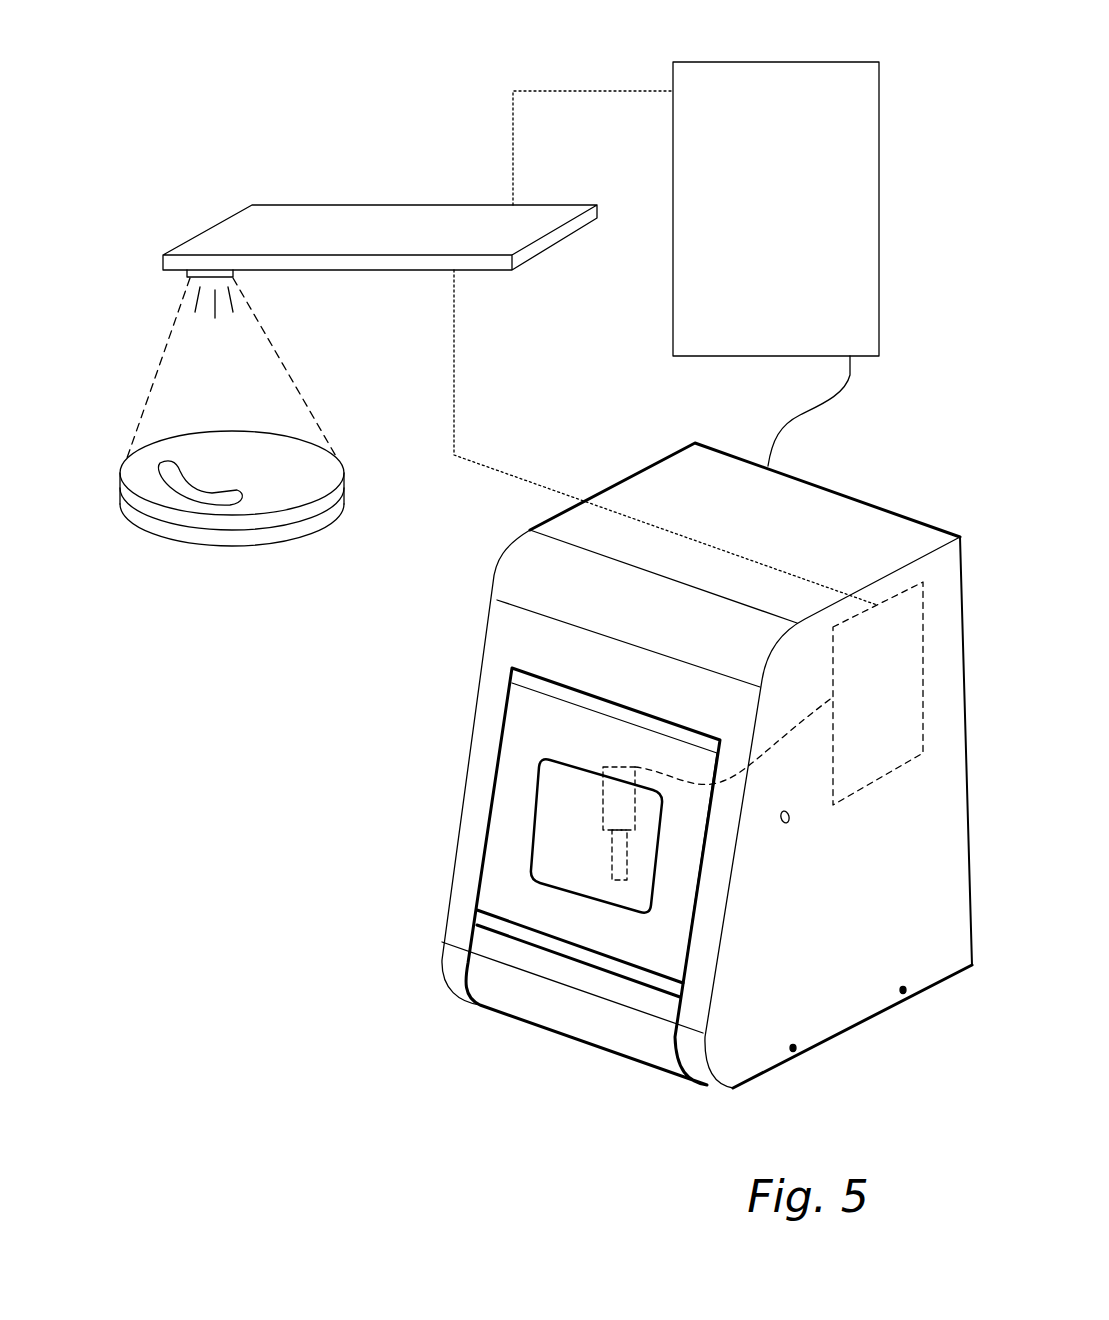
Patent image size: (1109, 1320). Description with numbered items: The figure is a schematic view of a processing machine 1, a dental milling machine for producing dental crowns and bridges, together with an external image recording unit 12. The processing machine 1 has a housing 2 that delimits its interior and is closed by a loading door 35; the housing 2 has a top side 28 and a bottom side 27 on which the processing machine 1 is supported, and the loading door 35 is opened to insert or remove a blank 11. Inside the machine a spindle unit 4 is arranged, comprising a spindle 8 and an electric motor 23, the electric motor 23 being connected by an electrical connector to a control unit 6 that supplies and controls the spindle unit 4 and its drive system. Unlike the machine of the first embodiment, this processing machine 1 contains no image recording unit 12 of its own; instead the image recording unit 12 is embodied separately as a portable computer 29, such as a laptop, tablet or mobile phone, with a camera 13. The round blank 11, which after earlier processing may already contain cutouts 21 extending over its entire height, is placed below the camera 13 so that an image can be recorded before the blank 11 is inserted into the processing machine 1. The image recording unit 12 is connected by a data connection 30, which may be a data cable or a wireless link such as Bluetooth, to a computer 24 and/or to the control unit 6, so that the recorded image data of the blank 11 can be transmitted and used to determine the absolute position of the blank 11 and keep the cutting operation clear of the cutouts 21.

The processing machine 1 is at (688, 749).
The housing 2 is at (709, 784).
The spindle unit 4 is at (531, 953).
The control unit 6 is at (910, 585).
The spindle 8 is at (619, 880).
The blank 11 is at (206, 507).
The image recording unit 12 is at (345, 269).
The camera 13 is at (192, 274).
The cutouts 21 is at (147, 467).
The electric motor 23 is at (603, 797).
The computer 24 is at (776, 209).
The bottom side 27 is at (833, 1045).
The top side 28 is at (745, 517).
The portable computer 29 is at (345, 205).
The data connection 30 is at (560, 90).
The loading door 35 is at (639, 972).